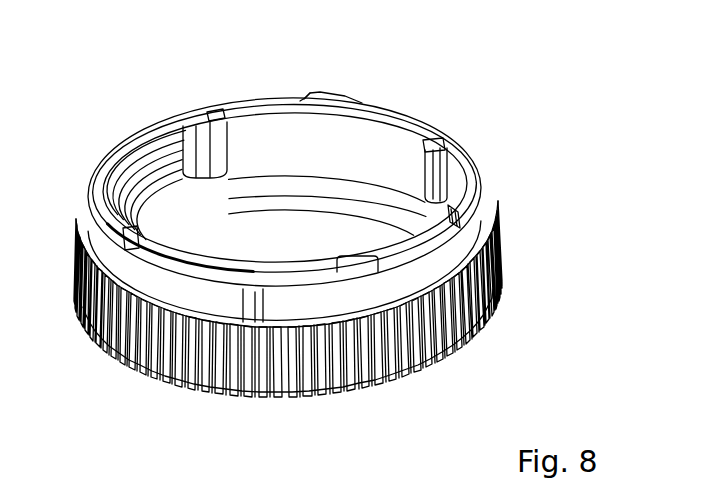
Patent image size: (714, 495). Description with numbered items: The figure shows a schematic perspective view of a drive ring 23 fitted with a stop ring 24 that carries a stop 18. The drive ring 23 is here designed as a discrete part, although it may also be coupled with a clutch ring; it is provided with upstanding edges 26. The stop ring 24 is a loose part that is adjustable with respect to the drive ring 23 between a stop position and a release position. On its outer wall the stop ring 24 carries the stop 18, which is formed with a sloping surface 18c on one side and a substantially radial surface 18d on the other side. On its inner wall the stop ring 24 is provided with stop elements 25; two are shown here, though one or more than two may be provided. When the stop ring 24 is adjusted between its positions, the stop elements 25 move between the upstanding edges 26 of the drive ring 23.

The stop 18 is at (320, 90).
The sloping surface 18c is at (347, 94).
The substantially radial surface 18d is at (308, 91).
The drive ring 23 is at (498, 284).
The stop ring 24 is at (470, 175).
The stop elements 25 is at (356, 262).
The upstanding edges 26 is at (375, 140).